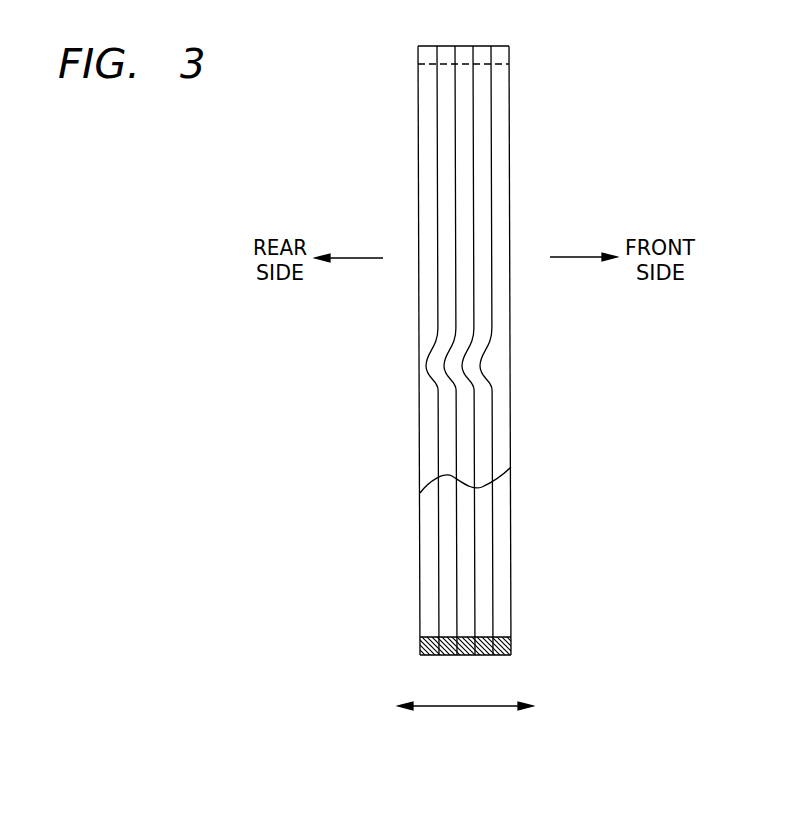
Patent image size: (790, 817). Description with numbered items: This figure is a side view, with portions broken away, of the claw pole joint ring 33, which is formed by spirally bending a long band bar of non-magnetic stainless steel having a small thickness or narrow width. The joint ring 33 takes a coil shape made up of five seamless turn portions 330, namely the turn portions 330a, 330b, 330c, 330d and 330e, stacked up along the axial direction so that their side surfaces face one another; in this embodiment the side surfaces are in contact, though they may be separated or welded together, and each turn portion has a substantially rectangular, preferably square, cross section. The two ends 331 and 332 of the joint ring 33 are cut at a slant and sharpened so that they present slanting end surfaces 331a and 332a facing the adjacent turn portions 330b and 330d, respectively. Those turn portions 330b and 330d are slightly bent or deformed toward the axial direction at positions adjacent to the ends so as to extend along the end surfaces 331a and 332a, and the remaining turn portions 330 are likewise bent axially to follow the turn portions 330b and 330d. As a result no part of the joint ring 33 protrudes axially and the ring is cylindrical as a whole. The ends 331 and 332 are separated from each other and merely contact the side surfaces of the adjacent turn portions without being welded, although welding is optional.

The joint ring 33 is at (547, 161).
The turn portions 330 is at (318, 55).
The turn portion 330a is at (426, 82).
The turn portion 330b is at (446, 118).
The turn portion 330c is at (463, 153).
The turn portion 330d is at (482, 184).
The turn portion 330e is at (499, 212).
The end of the joint ring 331 is at (436, 322).
The slanting end surface 331a is at (428, 338).
The end of the joint ring 332 is at (488, 356).
The slanting end surface 332a is at (491, 356).